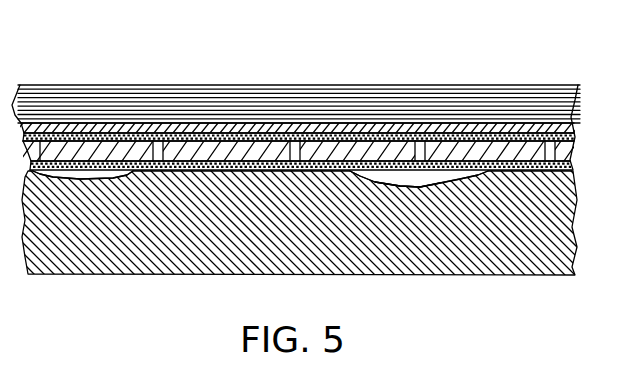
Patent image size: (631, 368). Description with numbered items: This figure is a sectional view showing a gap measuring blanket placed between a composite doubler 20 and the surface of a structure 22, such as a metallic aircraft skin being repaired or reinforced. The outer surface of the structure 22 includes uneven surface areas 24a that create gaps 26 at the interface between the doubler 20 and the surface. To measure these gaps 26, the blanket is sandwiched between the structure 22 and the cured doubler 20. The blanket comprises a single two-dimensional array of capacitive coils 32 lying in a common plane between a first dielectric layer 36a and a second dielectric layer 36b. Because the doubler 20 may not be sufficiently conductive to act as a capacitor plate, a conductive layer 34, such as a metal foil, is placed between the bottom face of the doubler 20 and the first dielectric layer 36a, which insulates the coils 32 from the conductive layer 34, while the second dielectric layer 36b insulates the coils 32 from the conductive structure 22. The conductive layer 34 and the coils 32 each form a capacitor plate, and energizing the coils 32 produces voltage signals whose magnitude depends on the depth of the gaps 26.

The composite doubler 20 is at (44, 107).
The structure 22 is at (65, 235).
The uneven surface areas 24a is at (410, 168).
The gaps 26 is at (128, 160).
The capacitive coils 32 is at (322, 152).
The conductive layer 34 is at (182, 128).
The first dielectric layer 36a is at (240, 138).
The second dielectric layer 36b is at (523, 167).